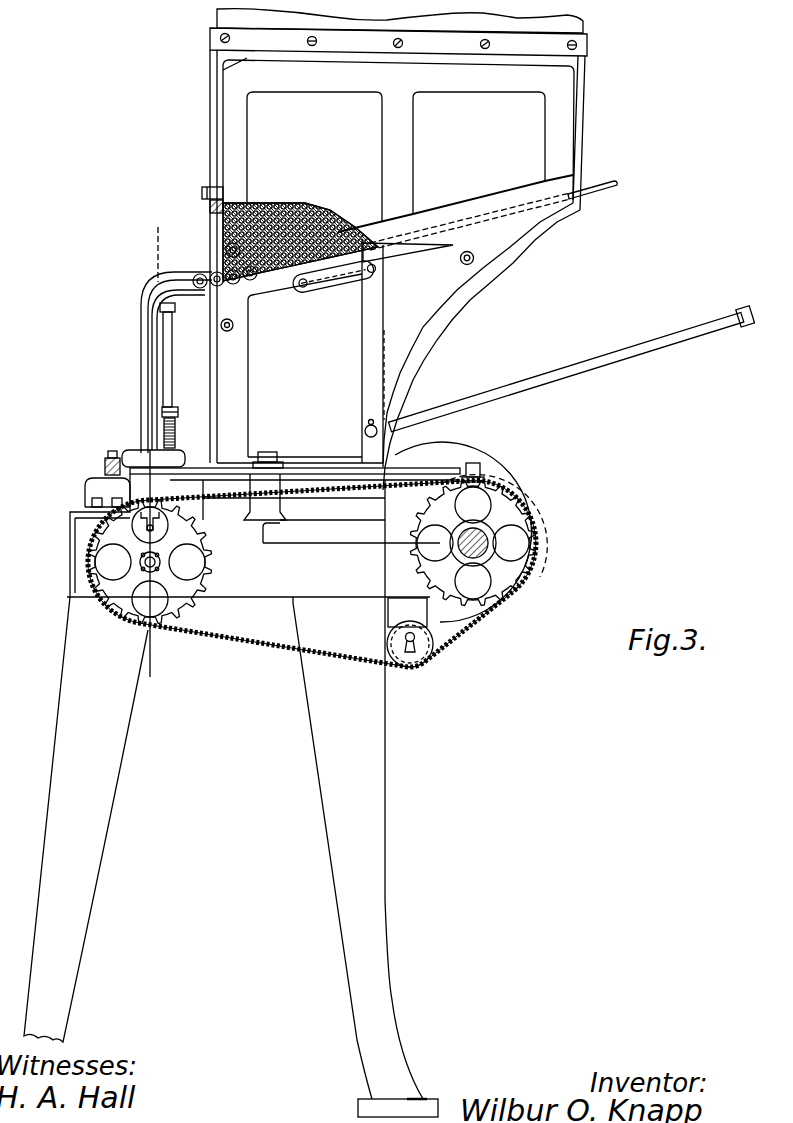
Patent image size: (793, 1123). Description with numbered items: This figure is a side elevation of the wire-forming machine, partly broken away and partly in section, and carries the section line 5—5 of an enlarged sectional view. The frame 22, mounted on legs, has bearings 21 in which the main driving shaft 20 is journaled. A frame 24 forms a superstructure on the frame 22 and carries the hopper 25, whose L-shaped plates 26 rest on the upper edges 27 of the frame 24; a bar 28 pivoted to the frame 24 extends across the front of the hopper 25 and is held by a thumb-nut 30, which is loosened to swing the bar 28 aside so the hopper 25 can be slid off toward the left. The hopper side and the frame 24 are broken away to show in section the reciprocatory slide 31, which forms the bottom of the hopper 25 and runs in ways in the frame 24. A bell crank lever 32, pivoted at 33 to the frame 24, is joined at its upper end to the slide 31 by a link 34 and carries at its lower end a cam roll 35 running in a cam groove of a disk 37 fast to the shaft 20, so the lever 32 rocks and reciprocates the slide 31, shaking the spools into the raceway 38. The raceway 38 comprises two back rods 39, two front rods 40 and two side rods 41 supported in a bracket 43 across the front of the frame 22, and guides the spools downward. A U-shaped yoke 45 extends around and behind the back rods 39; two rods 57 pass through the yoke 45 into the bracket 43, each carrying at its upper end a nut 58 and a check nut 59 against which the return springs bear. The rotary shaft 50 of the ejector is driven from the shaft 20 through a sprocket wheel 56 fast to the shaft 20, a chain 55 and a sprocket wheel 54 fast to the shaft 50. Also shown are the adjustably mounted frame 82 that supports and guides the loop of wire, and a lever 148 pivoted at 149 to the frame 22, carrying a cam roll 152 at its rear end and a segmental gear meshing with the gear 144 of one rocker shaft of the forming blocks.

The section line 5— 5 is at (154, 449).
The main driving shaft 20 is at (486, 538).
The bearings 21 is at (525, 530).
The frame 22 is at (281, 587).
The frame 24 is at (422, 360).
The hopper 25 is at (217, 21).
The L-shaped plates 26 is at (442, 47).
The upper edges 27 is at (223, 70).
The bar 28 is at (207, 186).
The thumb-nut 30 is at (202, 192).
The reciprocatory slide 31 is at (260, 282).
The bell crank lever 32 is at (362, 397).
The pivot 33 is at (365, 429).
The link 34 is at (328, 289).
The cam roll 35 is at (525, 492).
The disk 37 is at (561, 556).
The raceway 38 is at (175, 348).
The back rods 39 is at (167, 390).
The front rods 40 is at (141, 380).
The side rods 41 is at (153, 413).
The bracket 43 is at (85, 486).
The yoke 45 is at (130, 452).
The rotary shaft 50 is at (172, 562).
The sprocket wheel 54 is at (160, 562).
The chain 55 is at (336, 658).
The sprocket wheel 56 is at (420, 563).
The rods 57 is at (175, 430).
The nut 58 is at (178, 412).
The check nut 59 is at (183, 400).
The frame 82 is at (563, 380).
The gear 144 is at (105, 465).
The lever 148 is at (300, 482).
The pivot 149 is at (268, 452).
The cam roll 152 is at (480, 488).